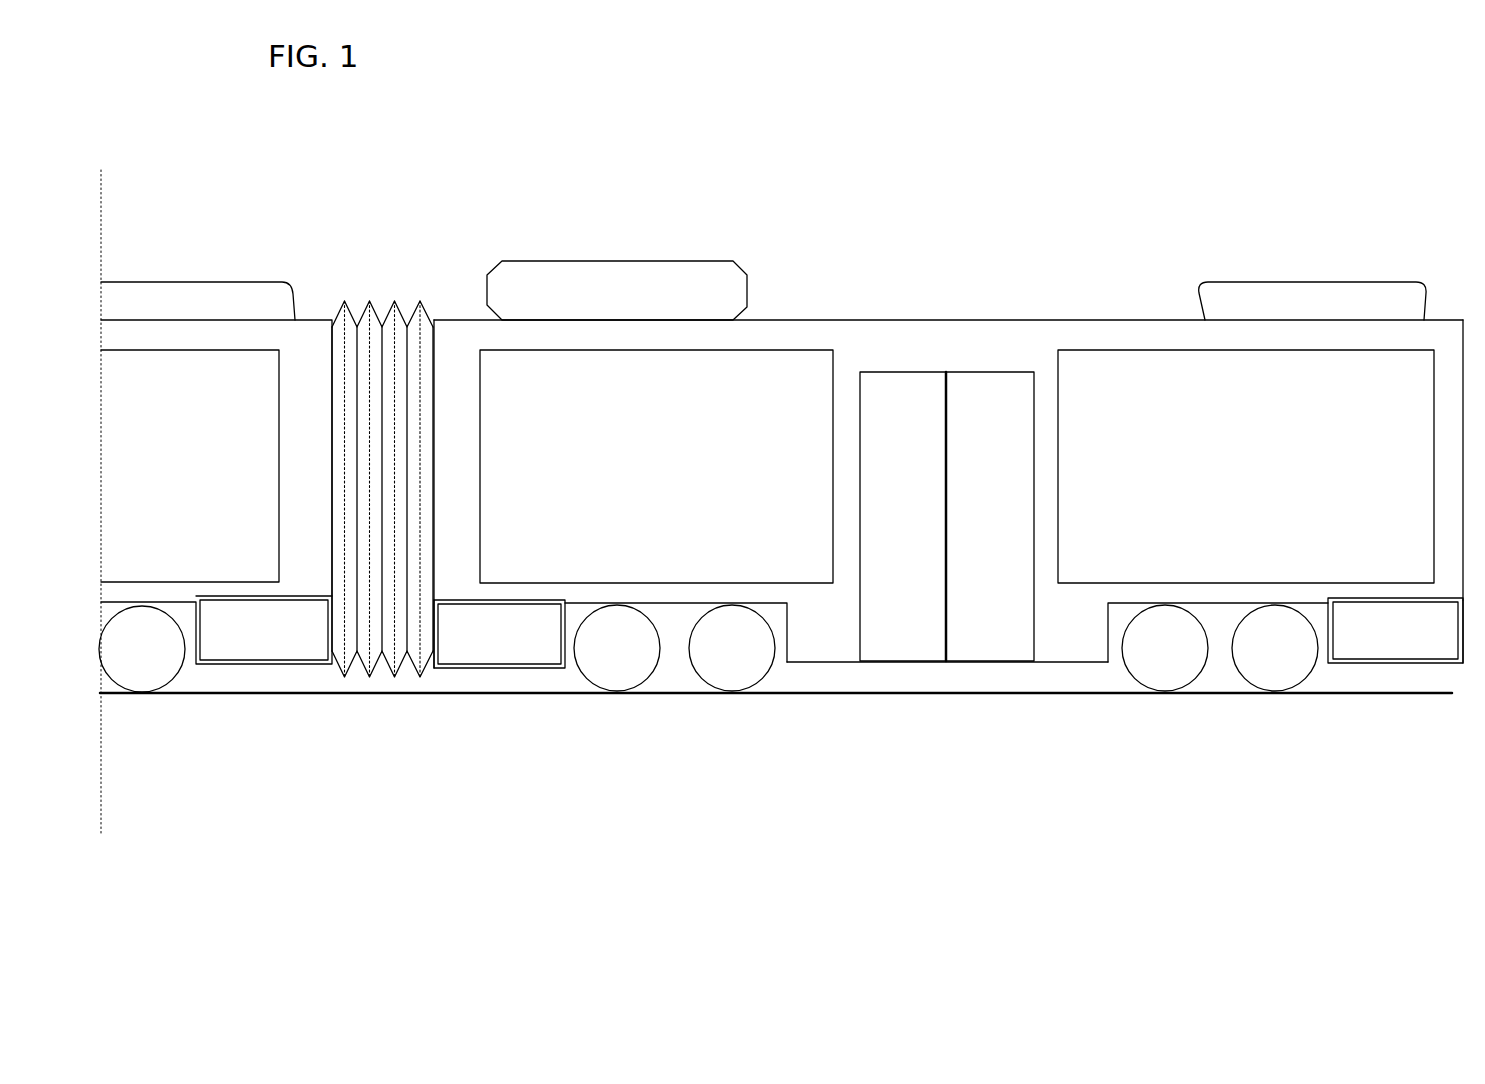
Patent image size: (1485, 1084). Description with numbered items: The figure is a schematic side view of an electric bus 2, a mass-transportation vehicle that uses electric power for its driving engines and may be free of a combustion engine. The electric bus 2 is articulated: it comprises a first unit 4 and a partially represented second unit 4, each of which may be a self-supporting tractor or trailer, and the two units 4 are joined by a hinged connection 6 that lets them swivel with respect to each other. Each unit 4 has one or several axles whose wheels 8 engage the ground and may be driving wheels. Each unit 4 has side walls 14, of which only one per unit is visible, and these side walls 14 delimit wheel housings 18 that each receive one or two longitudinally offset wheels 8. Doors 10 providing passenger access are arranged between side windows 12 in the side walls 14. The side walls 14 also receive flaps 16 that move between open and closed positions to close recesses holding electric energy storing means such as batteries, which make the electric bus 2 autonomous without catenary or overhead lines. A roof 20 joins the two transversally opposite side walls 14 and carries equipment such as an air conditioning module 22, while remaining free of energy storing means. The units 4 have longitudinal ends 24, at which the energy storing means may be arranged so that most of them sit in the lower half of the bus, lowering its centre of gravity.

The electric bus 2 is at (776, 142).
The unit 4 is at (272, 236).
The hinged connection 6 is at (385, 665).
The wheel 8 is at (148, 677).
The door 10 is at (888, 529).
The side window 12 is at (160, 476).
The side wall 14 is at (290, 517).
The flap 16 is at (247, 644).
The wheel housing 18 is at (190, 622).
The roof 20 is at (947, 319).
The air conditioning module 22 is at (604, 304).
The longitudinal end 24 is at (434, 362).